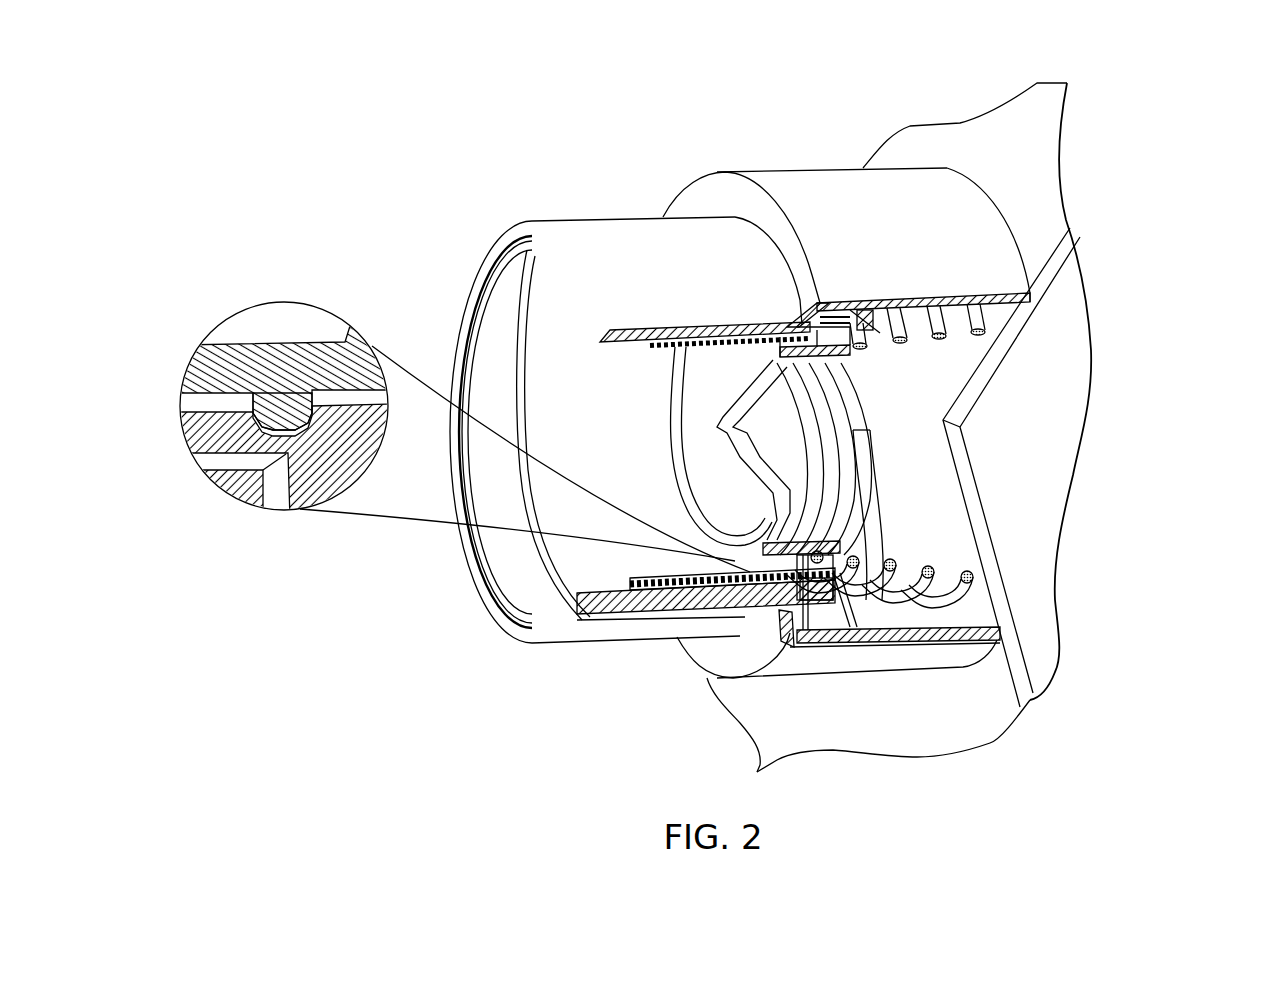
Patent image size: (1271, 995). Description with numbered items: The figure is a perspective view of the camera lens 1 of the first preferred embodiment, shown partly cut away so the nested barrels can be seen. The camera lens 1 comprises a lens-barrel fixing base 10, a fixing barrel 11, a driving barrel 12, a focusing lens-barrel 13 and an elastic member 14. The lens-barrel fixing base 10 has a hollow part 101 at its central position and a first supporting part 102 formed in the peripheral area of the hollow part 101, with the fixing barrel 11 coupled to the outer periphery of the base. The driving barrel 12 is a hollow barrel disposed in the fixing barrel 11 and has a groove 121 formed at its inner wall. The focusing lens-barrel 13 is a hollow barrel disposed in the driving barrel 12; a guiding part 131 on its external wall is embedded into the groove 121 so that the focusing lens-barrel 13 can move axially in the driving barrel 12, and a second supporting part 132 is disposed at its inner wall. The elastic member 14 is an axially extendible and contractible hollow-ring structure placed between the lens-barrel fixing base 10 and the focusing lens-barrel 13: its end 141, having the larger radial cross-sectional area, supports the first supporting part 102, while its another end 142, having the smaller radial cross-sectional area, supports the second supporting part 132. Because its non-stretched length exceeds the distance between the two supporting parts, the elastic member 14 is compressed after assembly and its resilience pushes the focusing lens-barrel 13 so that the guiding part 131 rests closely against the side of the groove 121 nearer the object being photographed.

The camera lens 1 is at (361, 134).
The lens-barrel fixing base 10 is at (1063, 260).
The hollow part 101 is at (930, 453).
The first supporting part 102 is at (980, 587).
The fixing barrel 11 is at (607, 640).
The driving barrel 12 is at (635, 607).
The groove 121 is at (340, 447).
The focusing lens-barrel 13 is at (747, 590).
The guiding part 131 is at (290, 500).
The second supporting part 132 is at (870, 352).
The elastic member 14 is at (925, 300).
The end 141 is at (987, 333).
The another end 142 is at (835, 600).